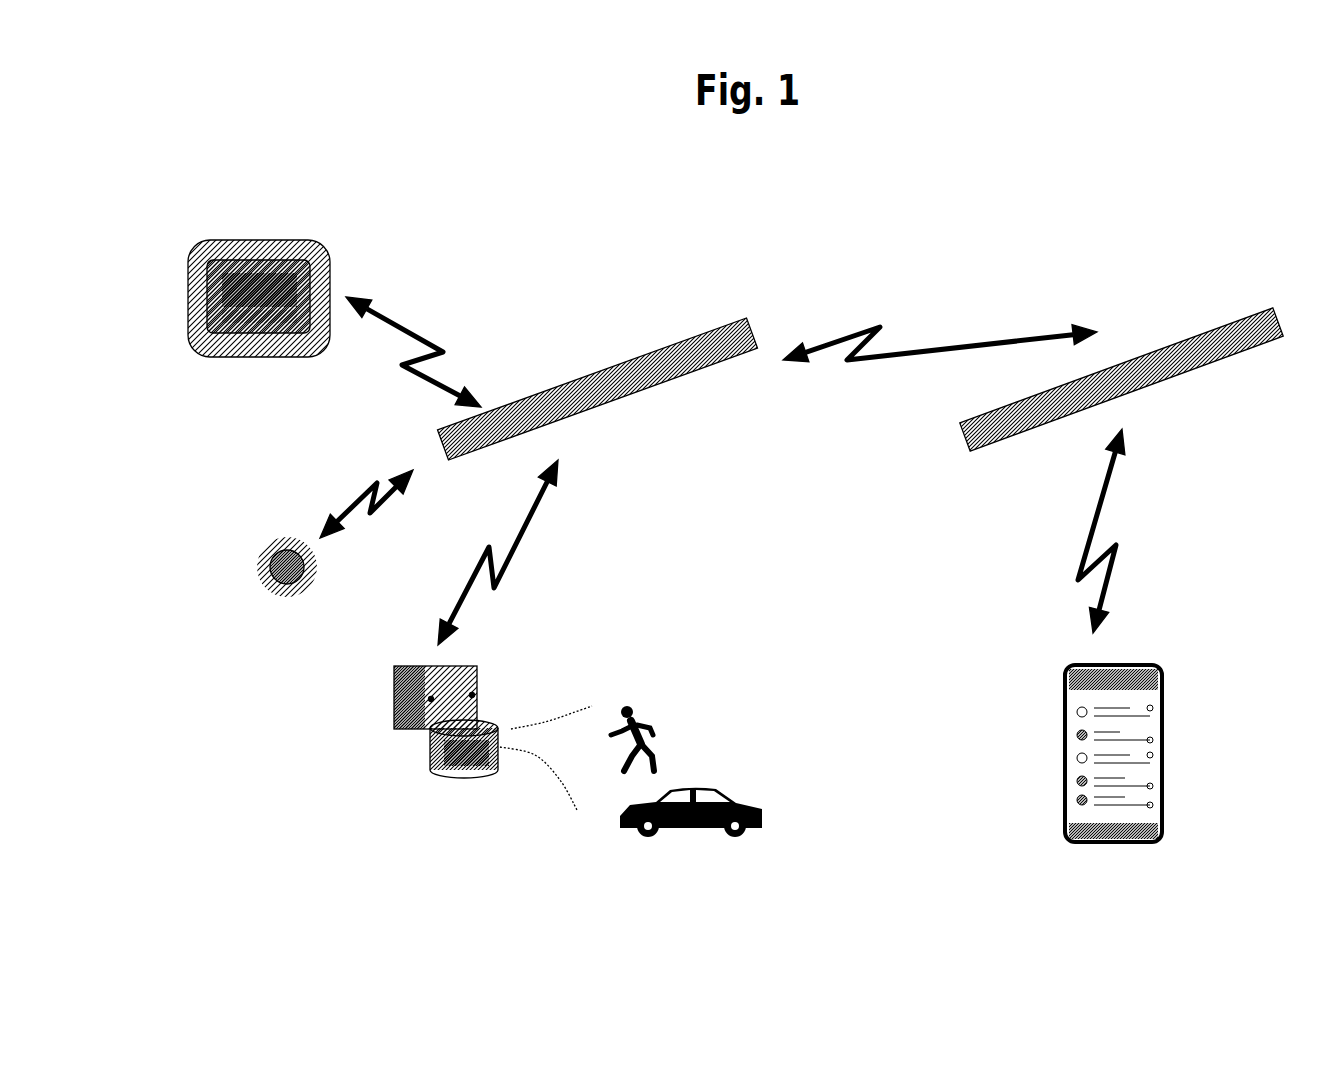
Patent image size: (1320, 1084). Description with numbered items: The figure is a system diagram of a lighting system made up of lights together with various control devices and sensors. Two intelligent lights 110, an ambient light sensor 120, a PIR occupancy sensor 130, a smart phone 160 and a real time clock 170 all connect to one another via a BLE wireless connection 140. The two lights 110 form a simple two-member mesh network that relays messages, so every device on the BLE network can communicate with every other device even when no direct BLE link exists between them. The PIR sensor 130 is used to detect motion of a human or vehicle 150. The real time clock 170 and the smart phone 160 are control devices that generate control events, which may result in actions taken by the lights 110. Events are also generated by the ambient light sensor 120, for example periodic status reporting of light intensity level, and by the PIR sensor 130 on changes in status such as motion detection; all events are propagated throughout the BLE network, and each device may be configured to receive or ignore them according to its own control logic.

The intelligent lights 110 is at (1237, 307).
The ambient light sensor 120 is at (263, 588).
The PIR occupancy sensor 130 is at (444, 780).
The BLE wireless connection 140 is at (425, 318).
The human or vehicle 150 is at (737, 800).
The smart phone 160 is at (1169, 777).
The real time clock 170 is at (258, 240).